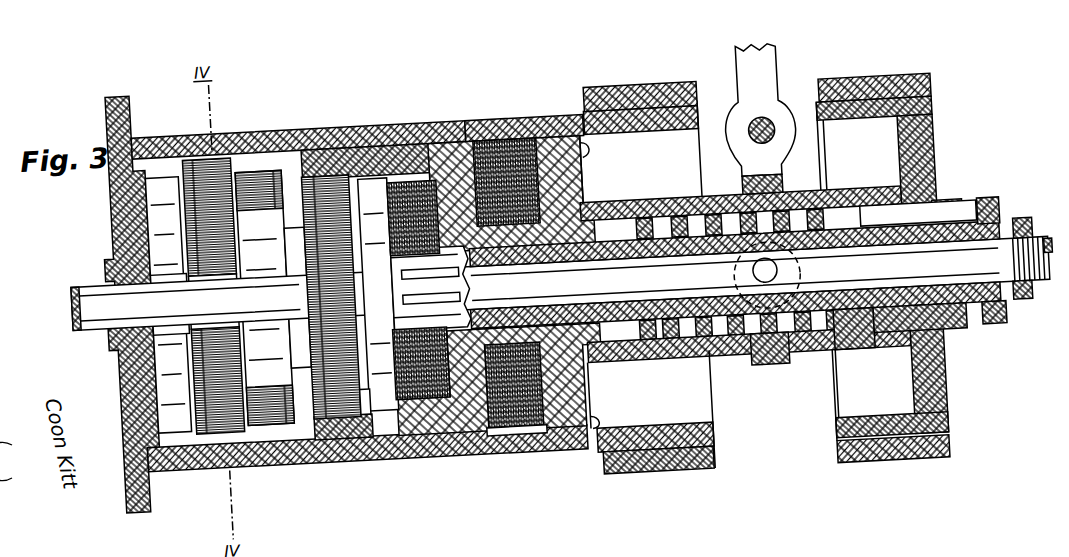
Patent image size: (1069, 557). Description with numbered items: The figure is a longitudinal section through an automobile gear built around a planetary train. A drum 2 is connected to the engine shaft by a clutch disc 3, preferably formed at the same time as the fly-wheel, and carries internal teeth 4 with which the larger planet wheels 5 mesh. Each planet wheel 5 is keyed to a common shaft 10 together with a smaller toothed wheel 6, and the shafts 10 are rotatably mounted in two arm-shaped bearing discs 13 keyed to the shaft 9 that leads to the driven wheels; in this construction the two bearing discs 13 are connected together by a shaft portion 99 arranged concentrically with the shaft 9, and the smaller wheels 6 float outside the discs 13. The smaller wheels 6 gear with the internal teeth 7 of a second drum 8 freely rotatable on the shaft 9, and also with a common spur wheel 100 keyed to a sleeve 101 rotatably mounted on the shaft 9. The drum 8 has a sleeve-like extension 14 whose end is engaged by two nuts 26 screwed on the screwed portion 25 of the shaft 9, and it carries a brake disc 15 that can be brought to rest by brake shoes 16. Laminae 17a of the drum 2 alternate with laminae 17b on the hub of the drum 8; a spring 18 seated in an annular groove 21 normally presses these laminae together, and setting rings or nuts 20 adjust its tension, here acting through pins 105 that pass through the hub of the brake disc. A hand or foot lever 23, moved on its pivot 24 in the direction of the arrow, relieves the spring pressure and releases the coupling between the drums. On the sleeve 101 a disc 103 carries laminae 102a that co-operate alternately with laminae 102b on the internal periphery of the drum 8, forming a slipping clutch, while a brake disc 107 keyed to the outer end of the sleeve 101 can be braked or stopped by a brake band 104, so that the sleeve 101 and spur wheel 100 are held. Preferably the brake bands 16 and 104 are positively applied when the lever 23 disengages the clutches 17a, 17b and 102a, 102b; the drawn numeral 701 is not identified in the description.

The drum 2 is at (297, 122).
The clutch disc 3 is at (117, 305).
The internal teeth 4 is at (368, 463).
The planet wheels 5 is at (199, 310).
The smaller toothed wheels 6 is at (318, 295).
The internal teeth 7 is at (397, 292).
The second drum 8 is at (520, 116).
The shaft 9 is at (565, 336).
The shafts 10 is at (159, 339).
The bearing discs 13 is at (186, 339).
The sleeve-like extension 14 is at (493, 259).
The brake disc 15 is at (644, 266).
The brake shoes 16 is at (650, 281).
The laminae 17a is at (517, 308).
The laminae 17b is at (514, 459).
The spring 18 is at (740, 306).
The setting rings 20 is at (996, 332).
The annular groove 21 is at (746, 297).
The hand or foot lever 23 is at (773, 204).
The pivot 24 is at (739, 119).
The screwed portion 25 is at (1034, 305).
The nuts 26 is at (1034, 217).
The shaft portion 99 is at (124, 336).
The spur wheel 100 is at (396, 438).
The sleeve 101 is at (1009, 197).
The laminae 102a is at (433, 173).
The laminae 102b is at (439, 403).
The disc 103 is at (414, 250).
The brake band 104 is at (884, 269).
The pins 105 is at (924, 192).
The brake disc 107 is at (894, 245).
The sleeve 701 is at (737, 315).